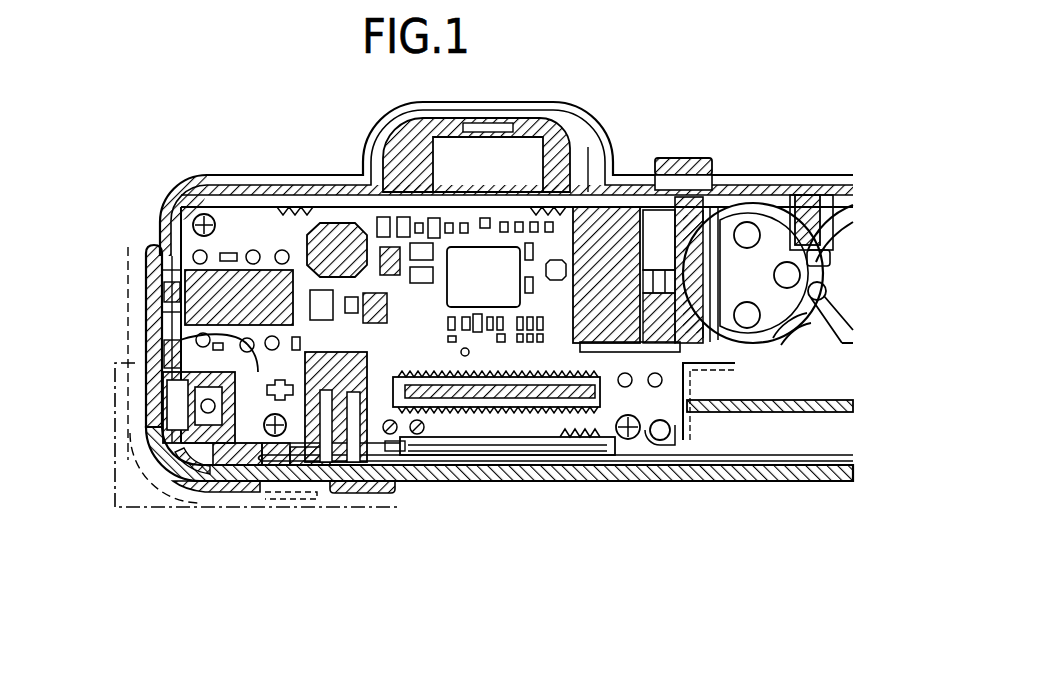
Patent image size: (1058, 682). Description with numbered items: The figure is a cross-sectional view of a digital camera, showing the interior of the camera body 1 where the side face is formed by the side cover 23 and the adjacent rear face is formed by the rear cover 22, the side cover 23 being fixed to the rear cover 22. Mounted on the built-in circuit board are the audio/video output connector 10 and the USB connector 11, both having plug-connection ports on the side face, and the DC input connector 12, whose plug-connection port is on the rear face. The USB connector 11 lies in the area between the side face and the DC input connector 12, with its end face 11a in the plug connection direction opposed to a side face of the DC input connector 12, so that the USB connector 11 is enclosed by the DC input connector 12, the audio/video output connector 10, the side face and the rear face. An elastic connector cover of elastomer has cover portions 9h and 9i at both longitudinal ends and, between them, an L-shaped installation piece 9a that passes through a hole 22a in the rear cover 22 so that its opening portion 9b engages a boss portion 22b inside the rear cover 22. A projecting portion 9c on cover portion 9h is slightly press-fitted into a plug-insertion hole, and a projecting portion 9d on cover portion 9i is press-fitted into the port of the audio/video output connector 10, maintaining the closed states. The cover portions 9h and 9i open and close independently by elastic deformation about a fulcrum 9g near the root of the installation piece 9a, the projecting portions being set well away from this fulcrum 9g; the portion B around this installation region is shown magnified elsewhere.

The camera body 1 is at (669, 496).
The side cover 23 is at (158, 244).
The rear cover 22 is at (550, 481).
The hole 22a is at (212, 460).
The boss portion 22b is at (223, 458).
The cover portion 9i is at (141, 238).
The projecting portion 9d is at (162, 279).
The fulcrum 9g is at (215, 470).
The opening portion 9b is at (220, 458).
The installation piece 9a is at (232, 452).
The cover portion 9h is at (350, 503).
The projecting portion 9c is at (380, 494).
The portion B is at (115, 483).
The USB connector 11 is at (187, 407).
The end face 11a is at (162, 337).
The audio/video output connector 10 is at (241, 272).
The DC input connector 12 is at (407, 482).